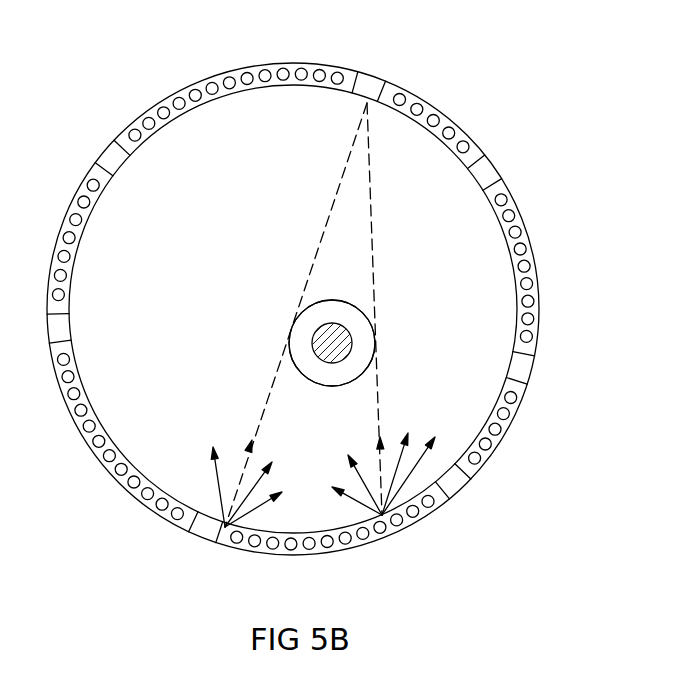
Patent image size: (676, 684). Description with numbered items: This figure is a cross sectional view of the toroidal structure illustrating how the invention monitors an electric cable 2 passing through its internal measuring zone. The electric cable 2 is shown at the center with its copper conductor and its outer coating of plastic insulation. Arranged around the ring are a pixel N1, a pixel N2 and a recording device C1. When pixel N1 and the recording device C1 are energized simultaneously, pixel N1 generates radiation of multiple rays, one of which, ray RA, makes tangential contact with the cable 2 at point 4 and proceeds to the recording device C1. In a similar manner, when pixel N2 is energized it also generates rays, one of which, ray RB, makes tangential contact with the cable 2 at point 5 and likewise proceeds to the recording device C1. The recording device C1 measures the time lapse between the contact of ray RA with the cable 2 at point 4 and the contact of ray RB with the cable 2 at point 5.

The recording device C1 is at (380, 66).
The ray RA is at (385, 269).
The ray RB is at (296, 267).
The electric cable 2 is at (345, 397).
The point 4 is at (388, 341).
The point 5 is at (276, 328).
The pixel N1 is at (400, 544).
The pixel N2 is at (219, 557).